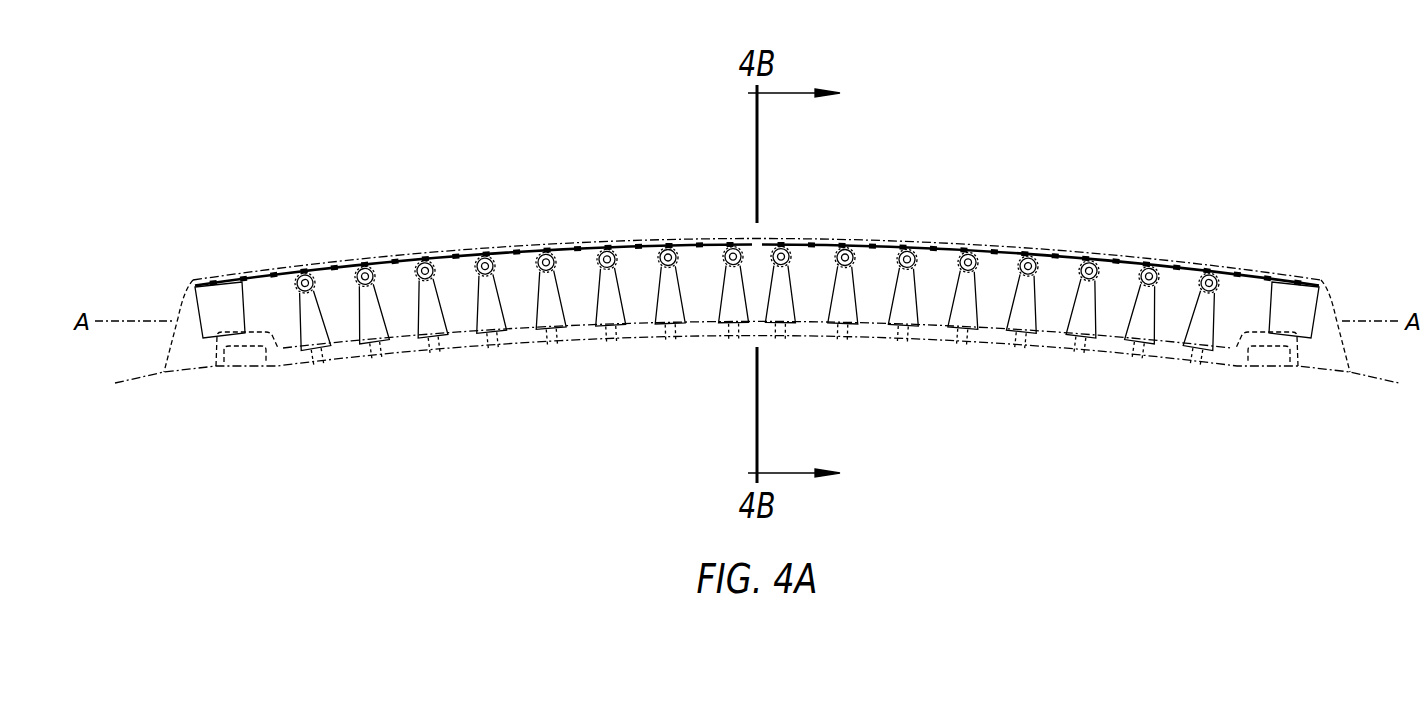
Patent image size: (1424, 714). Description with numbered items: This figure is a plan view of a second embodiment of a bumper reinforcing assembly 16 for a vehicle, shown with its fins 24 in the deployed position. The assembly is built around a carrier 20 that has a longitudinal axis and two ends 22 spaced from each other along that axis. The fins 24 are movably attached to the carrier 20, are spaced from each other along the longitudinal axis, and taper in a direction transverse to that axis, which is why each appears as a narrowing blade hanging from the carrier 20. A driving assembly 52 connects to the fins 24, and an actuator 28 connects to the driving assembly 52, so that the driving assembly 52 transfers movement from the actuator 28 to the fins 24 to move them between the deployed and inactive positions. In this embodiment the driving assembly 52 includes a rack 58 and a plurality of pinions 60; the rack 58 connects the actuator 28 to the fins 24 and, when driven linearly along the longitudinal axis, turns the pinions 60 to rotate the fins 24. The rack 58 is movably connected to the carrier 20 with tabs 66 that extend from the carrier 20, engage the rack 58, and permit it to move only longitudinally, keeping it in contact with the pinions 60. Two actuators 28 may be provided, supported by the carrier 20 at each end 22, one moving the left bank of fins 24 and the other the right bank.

The bumper reinforcing assembly 16 is at (241, 105).
The carrier 20 is at (208, 273).
The ends 22 is at (168, 345).
The fins 24 is at (376, 330).
The actuator 28 is at (210, 308).
The driving assembly 52 is at (240, 240).
The rack 58 is at (355, 266).
The pinions 60 is at (361, 286).
The tabs 66 is at (365, 266).